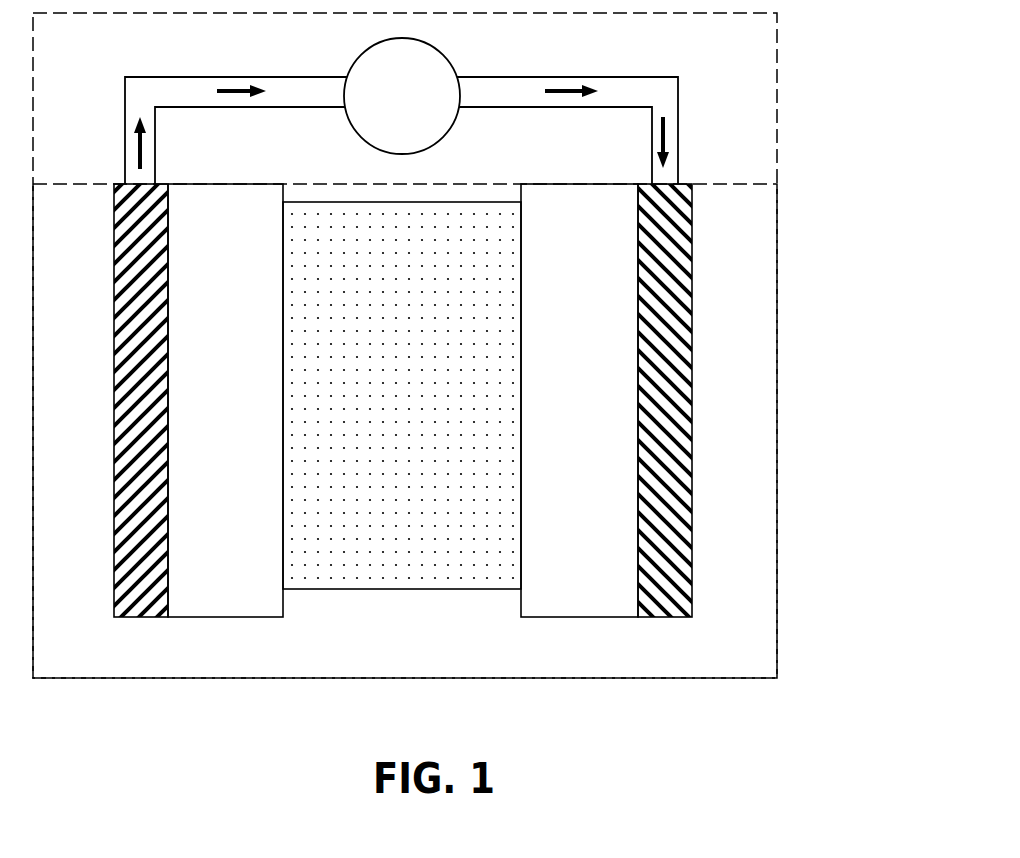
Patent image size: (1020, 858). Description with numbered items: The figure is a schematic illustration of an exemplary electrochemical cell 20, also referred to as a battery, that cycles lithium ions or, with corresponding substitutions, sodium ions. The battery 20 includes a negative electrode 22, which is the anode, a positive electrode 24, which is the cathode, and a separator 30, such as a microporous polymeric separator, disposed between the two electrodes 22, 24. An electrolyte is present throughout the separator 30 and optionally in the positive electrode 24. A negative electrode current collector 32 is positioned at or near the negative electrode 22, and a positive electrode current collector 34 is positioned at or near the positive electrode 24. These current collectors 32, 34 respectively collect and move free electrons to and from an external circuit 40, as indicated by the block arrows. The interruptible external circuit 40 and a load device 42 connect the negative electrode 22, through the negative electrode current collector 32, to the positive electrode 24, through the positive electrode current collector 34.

The electrochemical cell 20 is at (783, 267).
The negative electrode 22 is at (239, 359).
The positive electrode 24 is at (591, 359).
The separator 30 is at (415, 359).
The negative electrode current collector 32 is at (114, 407).
The positive electrode current collector 34 is at (692, 407).
The external circuit 40 is at (783, 142).
The load device 42 is at (415, 106).